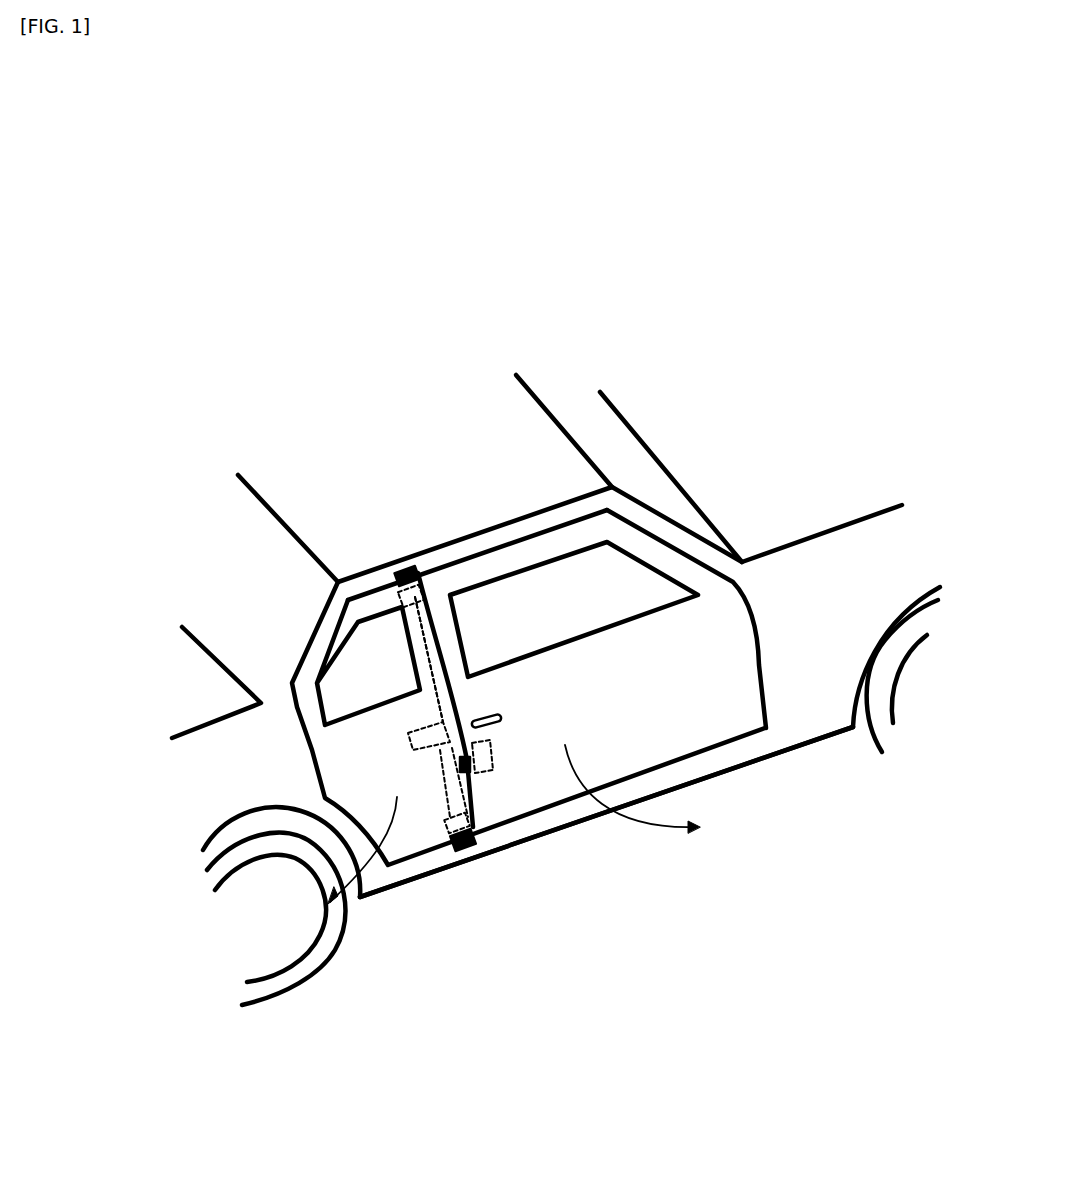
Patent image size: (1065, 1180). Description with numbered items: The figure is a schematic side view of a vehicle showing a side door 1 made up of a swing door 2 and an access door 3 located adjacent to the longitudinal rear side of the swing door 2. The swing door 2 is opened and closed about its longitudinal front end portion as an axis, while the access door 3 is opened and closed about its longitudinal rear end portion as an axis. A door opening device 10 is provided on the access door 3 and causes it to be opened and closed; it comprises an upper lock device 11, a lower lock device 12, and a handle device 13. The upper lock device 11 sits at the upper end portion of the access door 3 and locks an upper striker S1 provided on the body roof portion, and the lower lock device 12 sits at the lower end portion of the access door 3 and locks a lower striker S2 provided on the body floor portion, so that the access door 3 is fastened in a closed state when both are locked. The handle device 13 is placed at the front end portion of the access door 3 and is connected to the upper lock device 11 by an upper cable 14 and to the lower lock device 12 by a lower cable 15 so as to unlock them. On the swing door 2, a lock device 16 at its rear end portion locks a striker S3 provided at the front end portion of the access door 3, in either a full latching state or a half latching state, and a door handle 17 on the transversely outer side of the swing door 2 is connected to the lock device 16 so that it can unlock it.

The side door 1 is at (606, 858).
The swing door 2 is at (713, 740).
The access door 3 is at (407, 852).
The door opening device 10 is at (143, 578).
The upper lock device 11 is at (405, 602).
The lower lock device 12 is at (447, 830).
The handle device 13 is at (407, 733).
The upper cable 14 is at (427, 657).
The lower cable 15 is at (443, 787).
The lock device 16 is at (487, 772).
The door handle 17 is at (493, 727).
The upper striker S1 is at (398, 560).
The lower striker S2 is at (460, 850).
The striker S3 is at (468, 772).